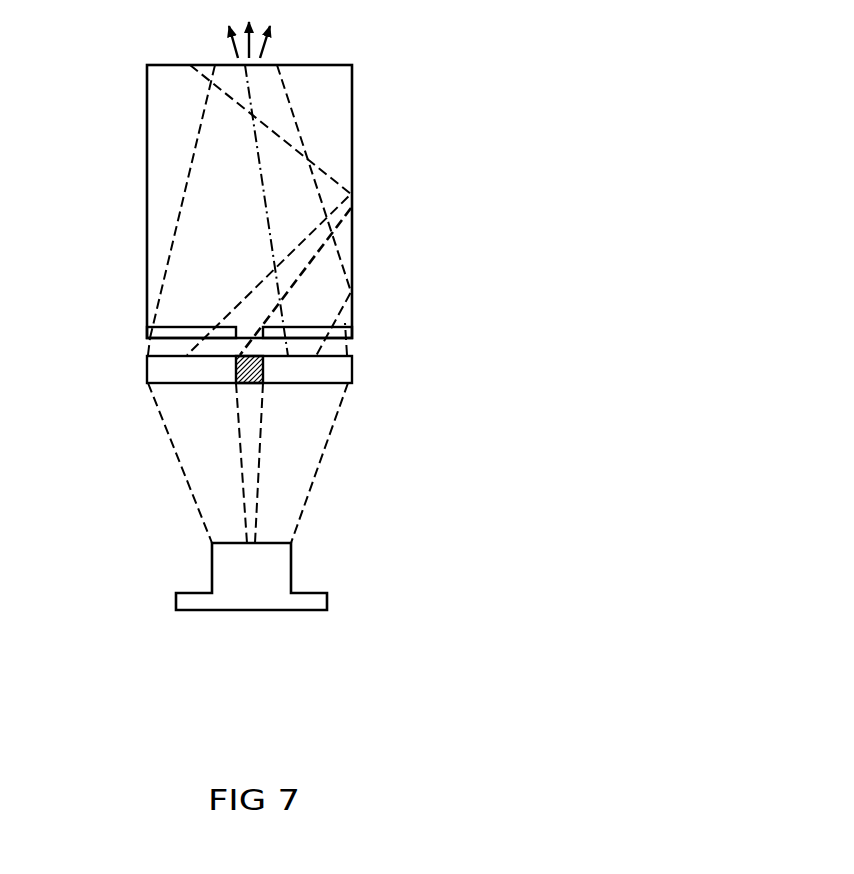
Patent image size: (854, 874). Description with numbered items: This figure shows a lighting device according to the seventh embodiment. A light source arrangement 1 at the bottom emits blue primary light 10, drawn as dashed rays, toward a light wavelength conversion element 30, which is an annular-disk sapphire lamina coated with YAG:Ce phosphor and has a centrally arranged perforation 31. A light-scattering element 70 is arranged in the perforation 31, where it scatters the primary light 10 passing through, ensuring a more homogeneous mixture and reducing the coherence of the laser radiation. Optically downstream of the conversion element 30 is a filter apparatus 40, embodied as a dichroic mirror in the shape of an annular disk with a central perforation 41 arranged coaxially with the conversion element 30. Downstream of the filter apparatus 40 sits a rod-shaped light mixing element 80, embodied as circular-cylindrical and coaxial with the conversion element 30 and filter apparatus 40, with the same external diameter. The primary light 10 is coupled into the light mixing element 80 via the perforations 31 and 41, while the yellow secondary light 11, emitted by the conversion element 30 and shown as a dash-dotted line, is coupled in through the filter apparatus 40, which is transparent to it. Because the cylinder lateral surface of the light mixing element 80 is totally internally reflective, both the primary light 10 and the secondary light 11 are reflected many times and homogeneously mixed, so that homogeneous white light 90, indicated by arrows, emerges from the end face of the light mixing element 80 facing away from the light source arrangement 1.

The light source arrangement 1 is at (251, 602).
The primary light 10 is at (300, 276).
The secondary light 11 is at (260, 203).
The light wavelength conversion element 30 is at (160, 369).
The perforation 31 is at (263, 370).
The filter apparatus 40 is at (147, 327).
The central perforation 41 is at (245, 333).
The light-scattering element 70 is at (245, 373).
The rod-shaped light mixing element 80 is at (330, 115).
The white light 90 is at (270, 43).